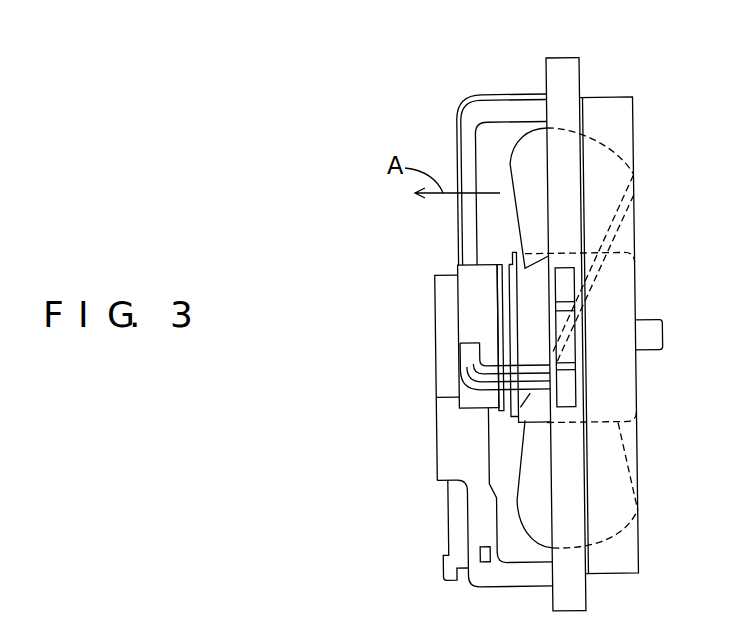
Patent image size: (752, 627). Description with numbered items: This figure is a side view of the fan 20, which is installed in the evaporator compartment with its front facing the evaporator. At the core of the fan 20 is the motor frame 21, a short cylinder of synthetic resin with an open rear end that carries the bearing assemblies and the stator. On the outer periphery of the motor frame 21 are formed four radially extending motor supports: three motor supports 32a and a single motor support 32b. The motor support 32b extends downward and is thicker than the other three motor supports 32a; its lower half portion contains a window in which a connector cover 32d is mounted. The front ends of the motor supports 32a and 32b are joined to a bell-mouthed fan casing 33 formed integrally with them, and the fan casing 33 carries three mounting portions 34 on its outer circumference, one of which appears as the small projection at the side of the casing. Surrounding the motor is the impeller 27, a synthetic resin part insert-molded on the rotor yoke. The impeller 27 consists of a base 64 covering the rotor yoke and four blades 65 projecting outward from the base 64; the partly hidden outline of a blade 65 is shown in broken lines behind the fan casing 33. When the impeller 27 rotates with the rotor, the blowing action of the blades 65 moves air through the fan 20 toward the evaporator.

The fan 20 is at (634, 81).
The motor frame 21 is at (470, 282).
The impeller 27 is at (511, 129).
The motor supports 32a is at (457, 138).
The motor support 32b is at (435, 470).
The connector cover 32d is at (448, 518).
The fan casing 33 is at (630, 122).
The mounting portions 34 is at (565, 355).
The base 64 is at (528, 320).
The blades 65 is at (527, 462).